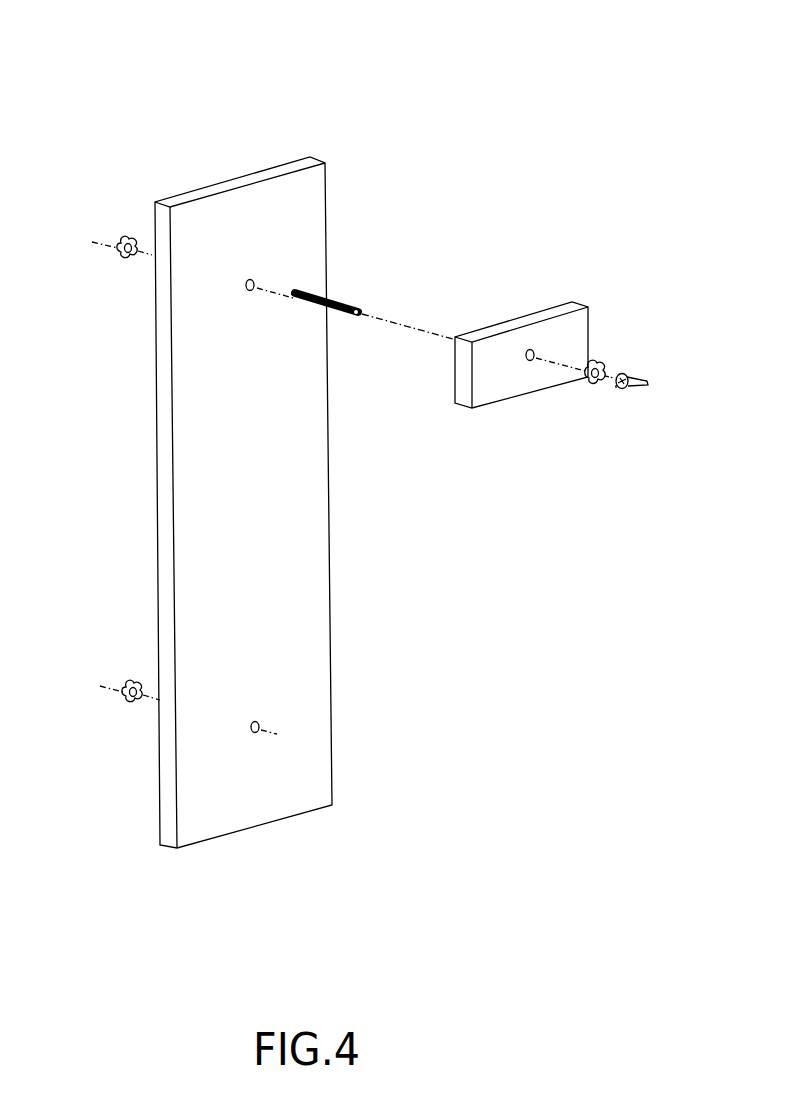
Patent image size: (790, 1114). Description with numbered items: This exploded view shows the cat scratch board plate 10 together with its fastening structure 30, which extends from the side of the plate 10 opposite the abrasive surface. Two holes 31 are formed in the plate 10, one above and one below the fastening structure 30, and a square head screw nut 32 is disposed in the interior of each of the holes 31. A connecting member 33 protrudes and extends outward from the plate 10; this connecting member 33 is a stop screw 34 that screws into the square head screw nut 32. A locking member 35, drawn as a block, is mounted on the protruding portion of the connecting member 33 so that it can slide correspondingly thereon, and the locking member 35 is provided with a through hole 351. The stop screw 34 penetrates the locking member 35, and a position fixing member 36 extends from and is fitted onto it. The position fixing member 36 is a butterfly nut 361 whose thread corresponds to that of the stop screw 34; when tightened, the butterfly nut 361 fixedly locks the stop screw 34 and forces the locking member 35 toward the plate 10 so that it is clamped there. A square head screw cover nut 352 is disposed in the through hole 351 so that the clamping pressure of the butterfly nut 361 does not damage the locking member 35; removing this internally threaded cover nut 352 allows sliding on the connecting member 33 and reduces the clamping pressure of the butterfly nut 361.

The plate 10 is at (265, 150).
The fastening structure 30 is at (465, 165).
The holes 31 is at (245, 285).
The square head screw nut 32 is at (127, 237).
The connecting member 33 is at (352, 285).
The stop screw 34 is at (357, 318).
The locking member 35 is at (570, 265).
The through hole 351 is at (529, 363).
The square head screw cover nut 352 is at (596, 386).
The position fixing member 36 is at (636, 354).
The butterfly nut 361 is at (626, 392).